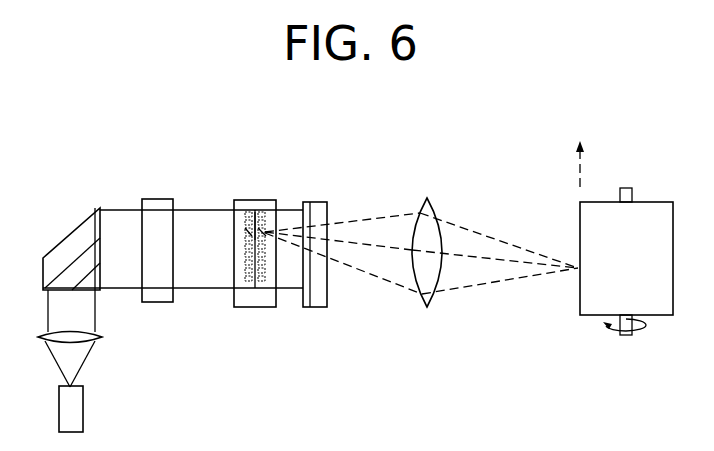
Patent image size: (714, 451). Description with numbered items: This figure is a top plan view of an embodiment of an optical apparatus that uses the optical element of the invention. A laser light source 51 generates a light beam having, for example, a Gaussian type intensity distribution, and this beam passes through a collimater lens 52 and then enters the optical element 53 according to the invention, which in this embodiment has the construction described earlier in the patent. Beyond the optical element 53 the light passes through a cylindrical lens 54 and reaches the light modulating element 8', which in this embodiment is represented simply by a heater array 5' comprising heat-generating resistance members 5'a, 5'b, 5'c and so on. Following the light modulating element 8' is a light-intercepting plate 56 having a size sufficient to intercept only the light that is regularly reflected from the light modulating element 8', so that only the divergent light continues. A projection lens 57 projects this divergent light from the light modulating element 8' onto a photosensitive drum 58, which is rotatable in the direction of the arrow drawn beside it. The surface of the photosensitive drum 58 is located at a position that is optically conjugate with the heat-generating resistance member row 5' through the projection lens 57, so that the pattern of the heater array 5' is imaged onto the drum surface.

The laser light source 51 is at (83, 405).
The collimater lens 52 is at (102, 337).
The optical element 53 is at (62, 238).
The cylindrical lens 54 is at (160, 199).
The heater array 5' is at (236, 224).
The heat-generating resistance member 5'a is at (280, 190).
The heat-generating resistance member 5'b is at (298, 201).
The heat-generating resistance member 5'c is at (217, 246).
The light modulating element 8' is at (258, 159).
The light-intercepting plate 56 is at (320, 308).
The projection lens 57 is at (420, 315).
The photosensitive drum 58 is at (595, 322).